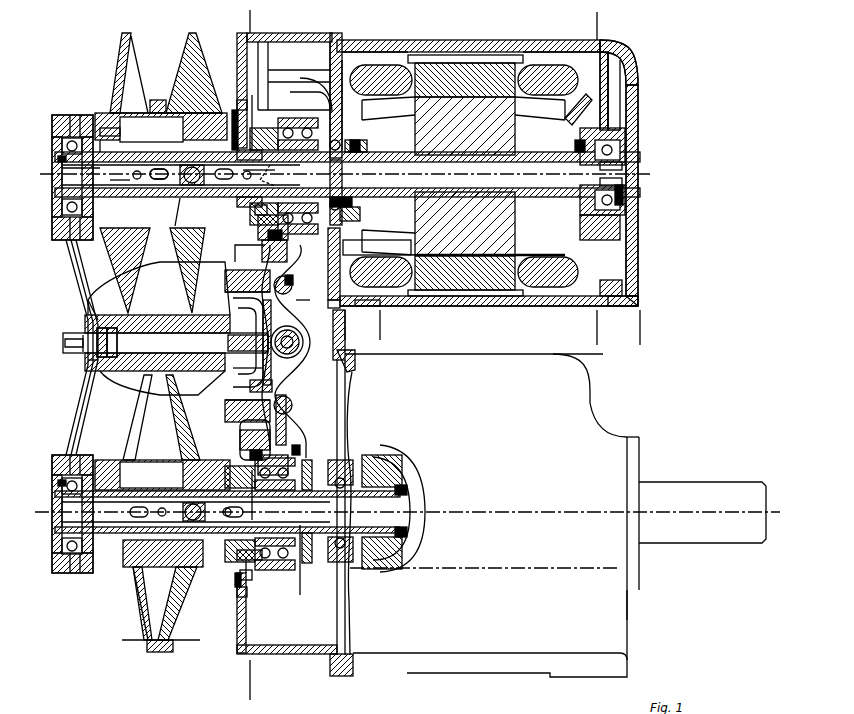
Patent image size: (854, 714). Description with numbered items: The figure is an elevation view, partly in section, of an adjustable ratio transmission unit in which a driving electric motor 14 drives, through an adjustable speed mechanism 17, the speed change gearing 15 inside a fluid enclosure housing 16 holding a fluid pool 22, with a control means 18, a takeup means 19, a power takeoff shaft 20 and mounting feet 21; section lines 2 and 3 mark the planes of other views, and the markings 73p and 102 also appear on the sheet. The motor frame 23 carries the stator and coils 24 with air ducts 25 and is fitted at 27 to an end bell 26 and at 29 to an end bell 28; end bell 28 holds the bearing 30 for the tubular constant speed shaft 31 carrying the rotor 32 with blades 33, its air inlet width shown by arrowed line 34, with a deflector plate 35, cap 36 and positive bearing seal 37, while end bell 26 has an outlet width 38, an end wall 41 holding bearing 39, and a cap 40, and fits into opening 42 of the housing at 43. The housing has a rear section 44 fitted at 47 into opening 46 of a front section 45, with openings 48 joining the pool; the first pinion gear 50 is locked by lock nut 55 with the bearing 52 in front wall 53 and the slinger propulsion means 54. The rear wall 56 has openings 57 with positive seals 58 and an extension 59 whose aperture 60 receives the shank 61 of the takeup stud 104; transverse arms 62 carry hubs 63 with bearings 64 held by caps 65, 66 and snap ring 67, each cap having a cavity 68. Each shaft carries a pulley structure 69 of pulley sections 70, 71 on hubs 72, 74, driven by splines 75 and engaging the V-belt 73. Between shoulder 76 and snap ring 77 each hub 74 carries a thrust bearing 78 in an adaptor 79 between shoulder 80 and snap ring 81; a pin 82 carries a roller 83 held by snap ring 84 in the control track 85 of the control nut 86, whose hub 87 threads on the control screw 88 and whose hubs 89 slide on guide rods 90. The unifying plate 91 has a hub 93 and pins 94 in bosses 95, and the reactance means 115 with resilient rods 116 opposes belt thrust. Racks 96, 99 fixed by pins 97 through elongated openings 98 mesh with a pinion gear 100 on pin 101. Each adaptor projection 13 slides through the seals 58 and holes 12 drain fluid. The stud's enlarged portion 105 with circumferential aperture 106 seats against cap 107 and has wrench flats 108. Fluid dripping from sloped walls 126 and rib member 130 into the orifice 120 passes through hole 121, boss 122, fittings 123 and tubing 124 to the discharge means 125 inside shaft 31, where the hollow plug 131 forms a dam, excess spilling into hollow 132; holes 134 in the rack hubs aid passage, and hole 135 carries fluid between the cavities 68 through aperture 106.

The section line 2- 2 is at (244, 21).
The section line 3- 3 is at (591, 21).
The holes 12 is at (275, 217).
The projection 13 is at (212, 470).
The driving electric motor 14 is at (459, 32).
The speed change gearing 15 is at (390, 419).
The fluid enclosure housing 16 is at (332, 683).
The adjustable speed mechanism 17 is at (158, 32).
The control means 18 is at (276, 597).
The takeup means 19 is at (52, 339).
The power takeoff shaft 20 is at (684, 490).
The mounting feet 21 is at (508, 675).
The fluid means 22 is at (466, 578).
The frame 23 is at (505, 52).
The stator and coils 24 is at (395, 75).
The air ducts 25 is at (436, 58).
The end bell 26 is at (345, 48).
The frame mounting fit 27 is at (392, 52).
The end bell 28 is at (636, 74).
The frame mounting fit 29 is at (548, 52).
The bearing 30 is at (625, 150).
The constant speed shaft 31 is at (535, 172).
The motor rotor 32 is at (415, 133).
The blades 33 is at (395, 118).
The arrowed line 34 is at (634, 329).
The air deflector plate 35 is at (612, 72).
The cap 36 is at (584, 130).
The positive bearing seal 37 is at (362, 146).
The arrowed line 38 is at (374, 324).
The bearing 39 is at (340, 128).
The cap 40 is at (362, 211).
The end wall 41 is at (334, 62).
The opening 42 is at (300, 60).
The end bell connection 43 is at (340, 32).
The rear section 44 is at (300, 660).
The front section 45 is at (620, 628).
The opening 46 is at (355, 370).
The section joint 47 is at (345, 352).
The openings 48 is at (345, 393).
The first pinion gear 50 is at (398, 546).
The bearing 52 is at (388, 478).
The front wall 53 is at (350, 625).
The propulsion means 54 is at (300, 582).
The lock nut 55 is at (402, 496).
The rear wall 56 is at (237, 52).
The concentric openings 57 is at (234, 112).
The positive seals 58 is at (240, 98).
The extension 59 is at (140, 396).
The aperture 60 is at (207, 372).
The shank 61 is at (118, 540).
The transverse arms 62 is at (72, 262).
The hub 63 is at (72, 114).
The bearing 64 is at (62, 140).
The cap 65 is at (85, 114).
The cap 66 is at (58, 112).
The snap ring 67 is at (58, 156).
The cavity 68 is at (60, 206).
The pulley structure 69 is at (108, 45).
The pulley section 70 is at (118, 64).
The pulley section 71 is at (190, 58).
The hub 72 is at (120, 470).
The endless V-belt 73 is at (160, 652).
The key 73p is at (145, 208).
The hub 74 is at (197, 445).
The splines 75 is at (308, 490).
The shoulder 76 is at (268, 134).
The snap ring 77 is at (295, 548).
The thrust bearing 78 is at (284, 118).
The adaptor 79 is at (298, 118).
The shoulder 80 is at (270, 455).
The snap ring 81 is at (300, 558).
The pin 82 is at (296, 283).
The roller 83 is at (282, 262).
The snap ring 84 is at (300, 410).
The control track 85 is at (236, 268).
The control nut 86 is at (300, 359).
The hub 87 is at (303, 337).
The control screw 88 is at (300, 344).
The hubs 89 is at (293, 290).
The guide rod 90 is at (262, 306).
The control unifying plate 91 is at (255, 368).
The hub 93 is at (253, 320).
The pins 94 is at (232, 283).
The bosses 95 is at (228, 300).
The rack 96 is at (218, 177).
The pin 97 is at (133, 175).
The elongated opening 98 is at (150, 180).
The rack 99 is at (246, 178).
The pinion gear 100 is at (190, 230).
The pin 101 is at (178, 208).
The base 102 is at (437, 708).
The takeup stud 104 is at (95, 330).
The enlarged diameter portion 105 is at (96, 352).
The circumferential aperture 106 is at (95, 362).
The cap 107 is at (84, 300).
The flat portions 108 is at (82, 338).
The reactance means 115 is at (322, 317).
The resilient rods 116 is at (290, 180).
The orifice 120 is at (300, 82).
The hole 121 is at (310, 96).
The boss 122 is at (636, 318).
The tubing fitting 123 is at (608, 280).
The tubing 124 is at (515, 308).
The discharge means 125 is at (628, 167).
The sloped side walls 126 is at (300, 58).
The rib member 130 is at (310, 70).
The hollow plug 131 is at (628, 183).
The hollow 132 is at (620, 200).
The holes 134 is at (100, 165).
The hole 135 is at (72, 244).